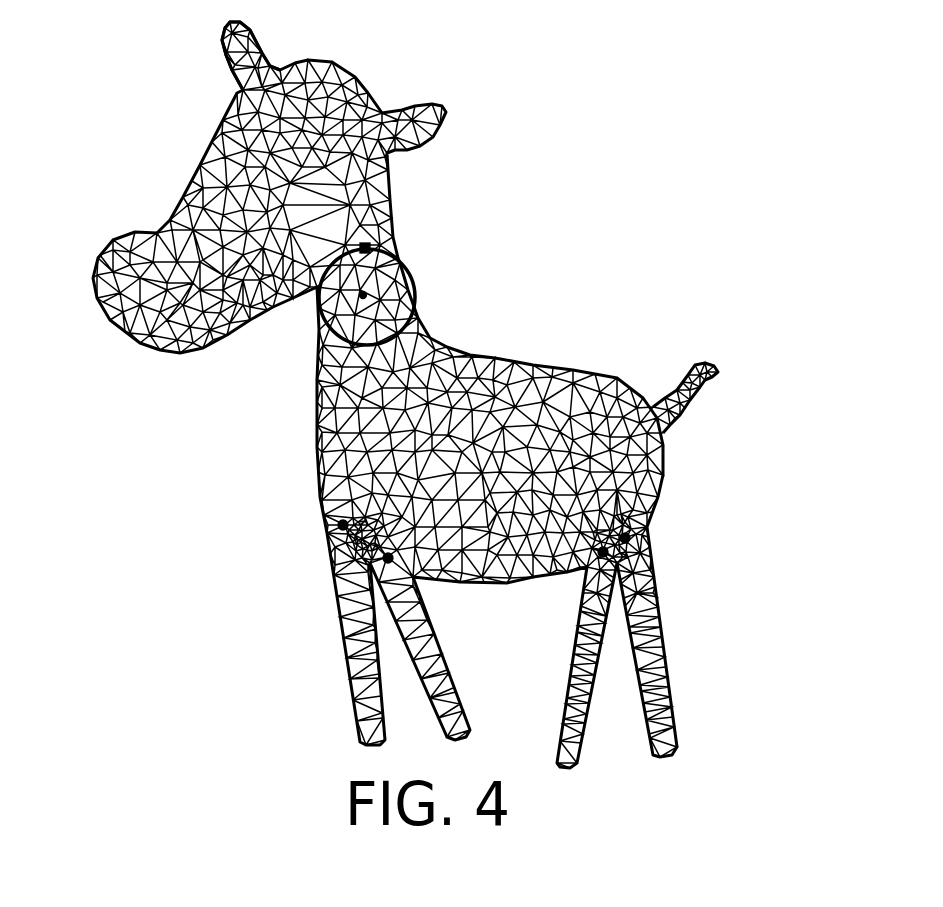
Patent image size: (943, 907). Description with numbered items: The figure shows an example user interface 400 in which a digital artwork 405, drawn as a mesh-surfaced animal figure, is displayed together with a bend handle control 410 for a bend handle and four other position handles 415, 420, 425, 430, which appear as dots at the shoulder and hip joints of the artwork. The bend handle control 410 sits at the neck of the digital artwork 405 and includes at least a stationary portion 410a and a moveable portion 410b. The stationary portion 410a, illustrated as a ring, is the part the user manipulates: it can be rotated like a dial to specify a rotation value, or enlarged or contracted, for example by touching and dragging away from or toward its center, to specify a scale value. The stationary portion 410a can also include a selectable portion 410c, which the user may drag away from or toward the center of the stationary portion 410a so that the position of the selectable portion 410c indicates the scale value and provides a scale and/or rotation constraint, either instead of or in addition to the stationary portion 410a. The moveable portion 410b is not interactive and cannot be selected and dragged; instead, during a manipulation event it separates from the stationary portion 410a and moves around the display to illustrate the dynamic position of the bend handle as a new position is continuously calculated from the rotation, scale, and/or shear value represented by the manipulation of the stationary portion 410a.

The user interface 400 is at (580, 50).
The digital artwork 405 is at (148, 67).
The bend handle control 410 is at (381, 267).
The stationary portion 410a is at (415, 296).
The moveable portion 410b is at (401, 263).
The selectable portion 410c is at (368, 243).
The position handle 415 is at (340, 524).
The position handle 420 is at (336, 561).
The position handle 425 is at (640, 543).
The position handle 430 is at (653, 590).